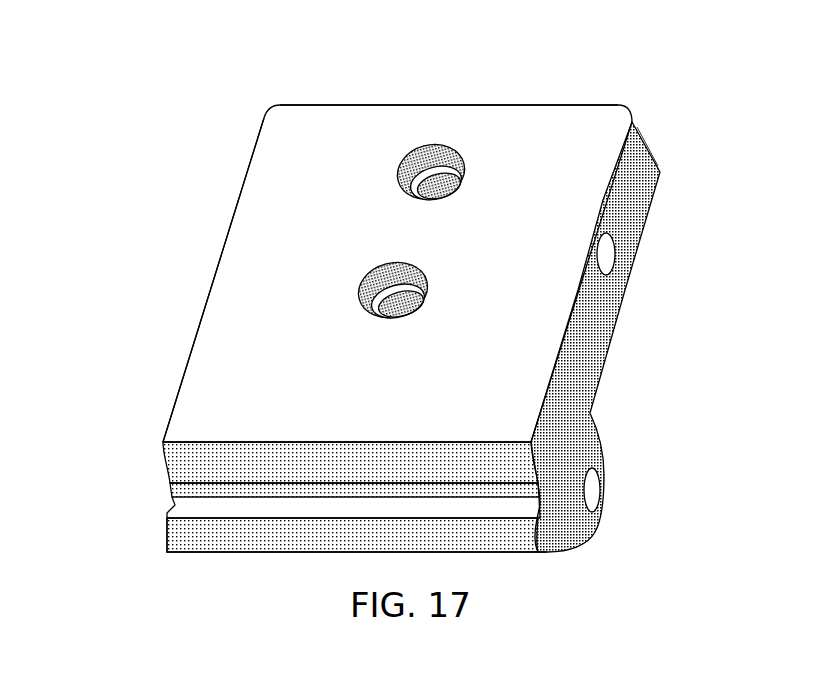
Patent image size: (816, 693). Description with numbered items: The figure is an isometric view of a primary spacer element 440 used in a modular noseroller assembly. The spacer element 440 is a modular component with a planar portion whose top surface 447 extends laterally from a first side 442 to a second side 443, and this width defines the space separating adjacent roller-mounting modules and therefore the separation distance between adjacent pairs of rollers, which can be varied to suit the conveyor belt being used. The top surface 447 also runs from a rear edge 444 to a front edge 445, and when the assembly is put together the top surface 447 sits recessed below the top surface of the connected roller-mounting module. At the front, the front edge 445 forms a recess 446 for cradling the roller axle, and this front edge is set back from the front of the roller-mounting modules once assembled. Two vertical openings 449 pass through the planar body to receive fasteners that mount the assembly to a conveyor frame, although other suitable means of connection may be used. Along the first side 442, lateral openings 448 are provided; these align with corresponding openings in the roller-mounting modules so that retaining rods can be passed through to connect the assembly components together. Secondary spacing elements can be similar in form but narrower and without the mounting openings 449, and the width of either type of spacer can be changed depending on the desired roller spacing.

The primary spacer element 440 is at (384, 298).
The first side 442 is at (596, 327).
The second side 443 is at (208, 280).
The rear edge 444 is at (358, 102).
The front edge 445 is at (165, 461).
The recess 446 is at (173, 507).
The top surface 447 is at (320, 238).
The lateral openings 448 is at (610, 260).
The vertical openings 449 is at (378, 277).